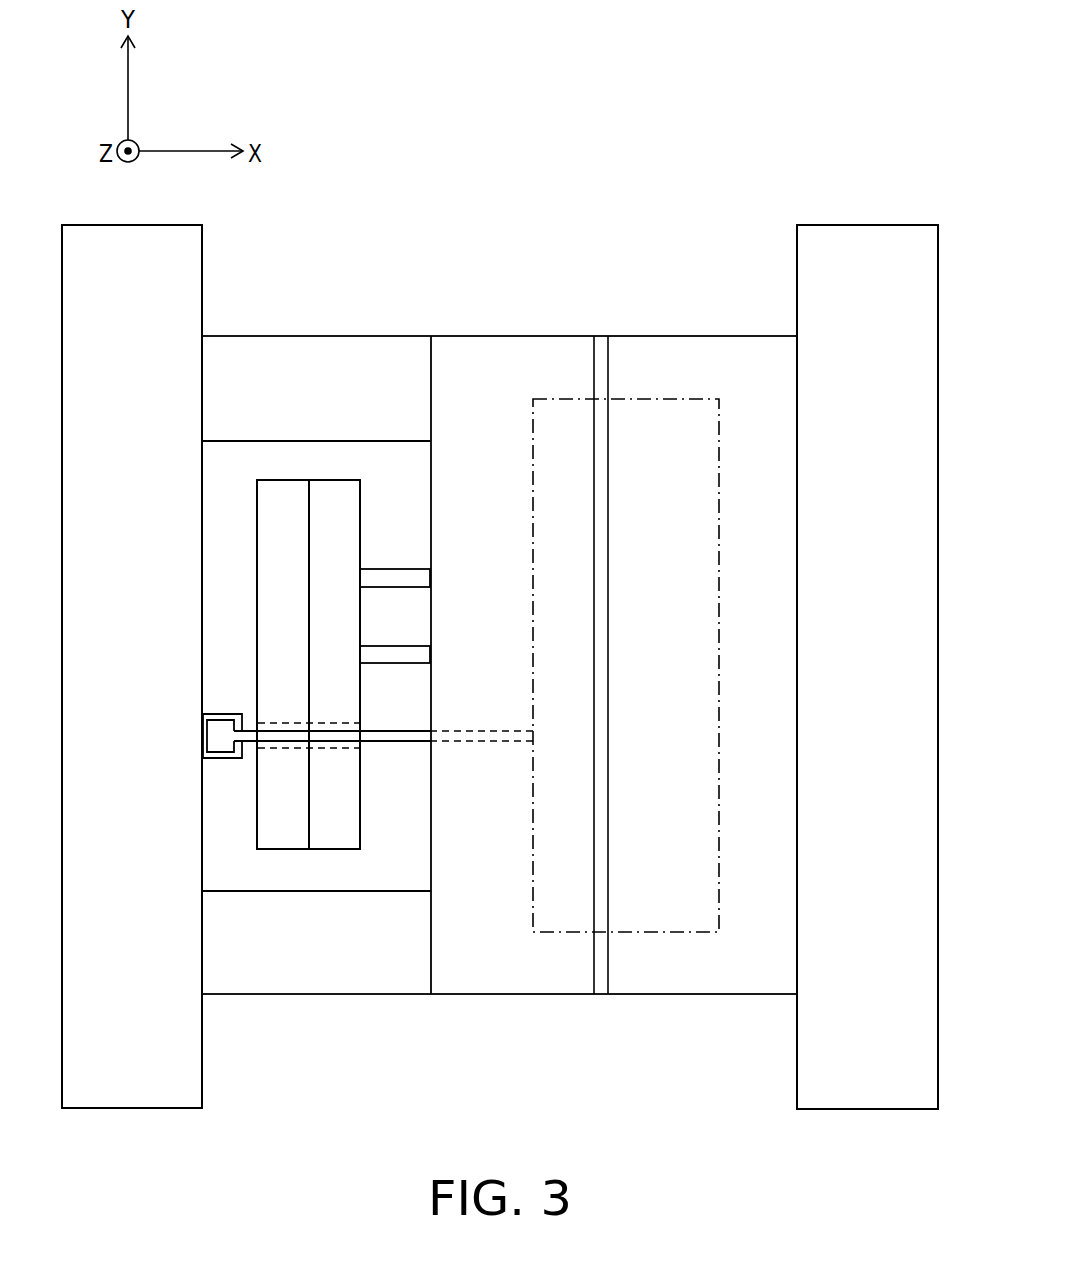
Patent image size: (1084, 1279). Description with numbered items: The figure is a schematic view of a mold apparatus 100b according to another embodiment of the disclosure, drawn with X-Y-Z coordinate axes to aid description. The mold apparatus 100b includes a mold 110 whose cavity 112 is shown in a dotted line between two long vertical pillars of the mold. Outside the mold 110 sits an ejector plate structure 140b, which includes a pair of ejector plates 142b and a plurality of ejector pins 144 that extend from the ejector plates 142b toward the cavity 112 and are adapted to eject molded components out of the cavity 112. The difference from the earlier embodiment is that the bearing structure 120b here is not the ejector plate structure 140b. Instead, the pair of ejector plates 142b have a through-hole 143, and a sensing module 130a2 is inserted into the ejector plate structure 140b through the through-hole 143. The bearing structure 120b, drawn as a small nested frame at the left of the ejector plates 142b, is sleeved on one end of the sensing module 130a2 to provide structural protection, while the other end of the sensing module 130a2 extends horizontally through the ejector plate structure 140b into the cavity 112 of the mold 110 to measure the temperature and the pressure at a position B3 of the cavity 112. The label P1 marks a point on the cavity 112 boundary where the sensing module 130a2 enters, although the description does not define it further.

The mold apparatus 100b is at (626, 221).
The mold 110 is at (653, 336).
The cavity 112 is at (571, 398).
The bearing structure 120b is at (222, 713).
The sensing module 130a2 is at (220, 745).
The ejector plate structure 140b is at (335, 480).
The ejector plates 142b is at (277, 838).
The through-hole 143 is at (367, 752).
The ejector pins 144 is at (396, 569).
The position P1 is at (530, 724).
The position B3 is at (545, 737).